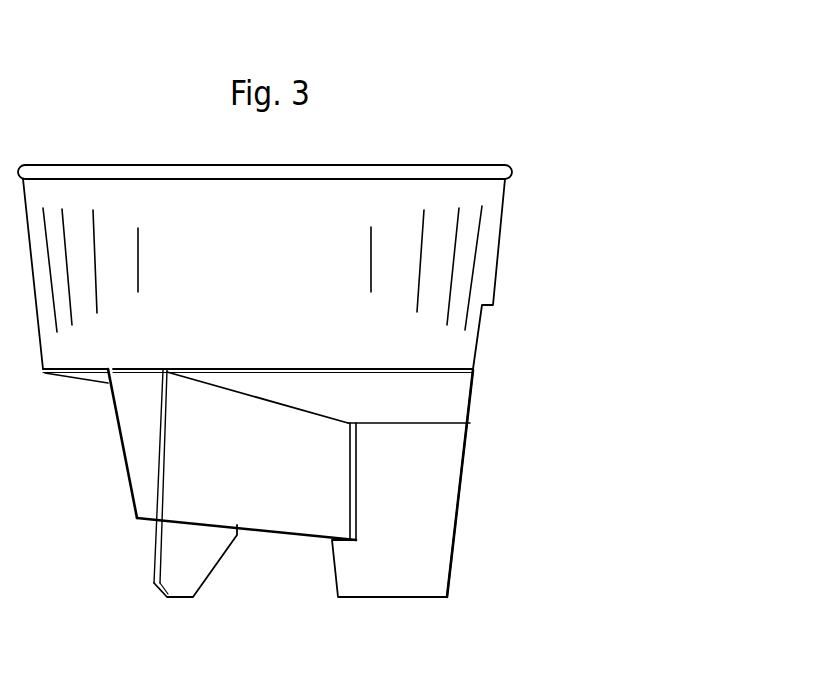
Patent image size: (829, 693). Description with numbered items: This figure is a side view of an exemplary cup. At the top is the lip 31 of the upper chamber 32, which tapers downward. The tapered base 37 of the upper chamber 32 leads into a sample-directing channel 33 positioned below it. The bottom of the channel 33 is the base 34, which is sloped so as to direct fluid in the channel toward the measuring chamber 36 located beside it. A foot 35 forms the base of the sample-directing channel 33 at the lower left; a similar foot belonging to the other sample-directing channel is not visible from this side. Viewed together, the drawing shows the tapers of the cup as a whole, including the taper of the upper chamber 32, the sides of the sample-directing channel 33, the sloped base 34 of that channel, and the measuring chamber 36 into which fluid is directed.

The lip 31 is at (490, 172).
The upper chamber 32 is at (345, 317).
The sample-directing channel 33 is at (131, 428).
The bottom of channel 34 is at (290, 517).
The foot 35 is at (177, 552).
The measuring chamber 36 is at (428, 508).
The tapered base 37 is at (442, 398).